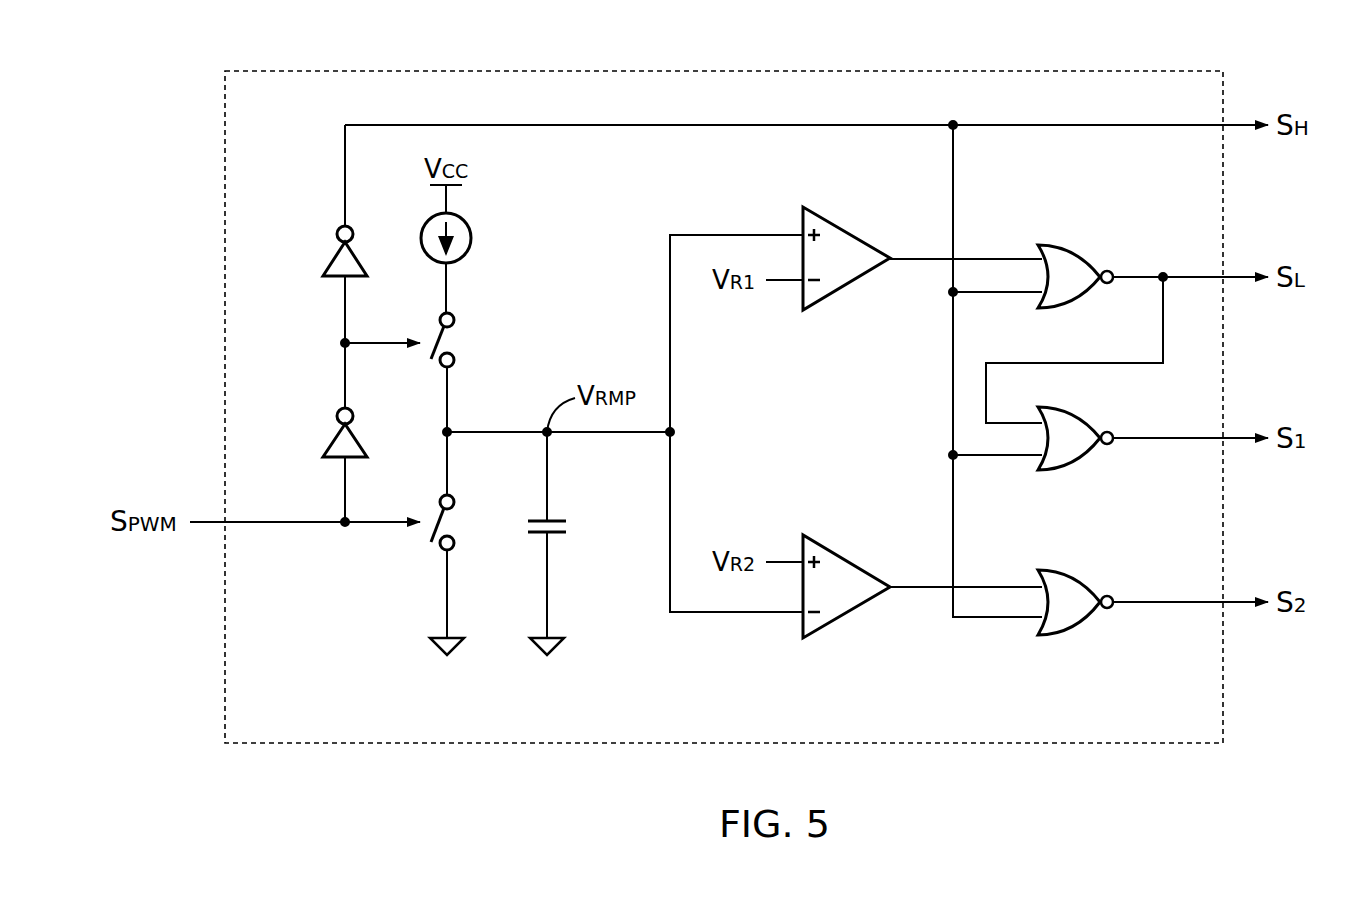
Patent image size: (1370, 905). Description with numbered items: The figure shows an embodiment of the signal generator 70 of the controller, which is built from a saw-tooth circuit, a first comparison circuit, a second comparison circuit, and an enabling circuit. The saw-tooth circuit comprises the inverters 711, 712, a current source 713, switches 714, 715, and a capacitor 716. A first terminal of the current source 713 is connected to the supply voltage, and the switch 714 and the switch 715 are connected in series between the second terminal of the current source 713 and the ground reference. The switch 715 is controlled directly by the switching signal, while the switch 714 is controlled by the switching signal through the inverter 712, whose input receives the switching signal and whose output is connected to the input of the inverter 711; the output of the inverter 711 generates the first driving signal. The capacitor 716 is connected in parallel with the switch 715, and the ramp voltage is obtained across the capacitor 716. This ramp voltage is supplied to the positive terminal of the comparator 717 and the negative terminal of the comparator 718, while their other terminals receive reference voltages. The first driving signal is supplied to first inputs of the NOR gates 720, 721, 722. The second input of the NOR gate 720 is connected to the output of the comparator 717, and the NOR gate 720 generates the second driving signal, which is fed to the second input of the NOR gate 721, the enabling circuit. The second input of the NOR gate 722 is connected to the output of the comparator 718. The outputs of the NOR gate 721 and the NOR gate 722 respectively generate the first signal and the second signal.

The signal generator 70 is at (1158, 71).
The inverter 711 is at (326, 262).
The inverter 712 is at (326, 444).
The current source 713 is at (472, 240).
The switch 714 is at (462, 337).
The switch 715 is at (462, 523).
The capacitor 716 is at (570, 524).
The comparator 717 is at (843, 288).
The comparator 718 is at (843, 617).
The NOR gate 720 is at (1068, 245).
The NOR gate 721 is at (1068, 472).
The NOR gate 722 is at (1068, 637).